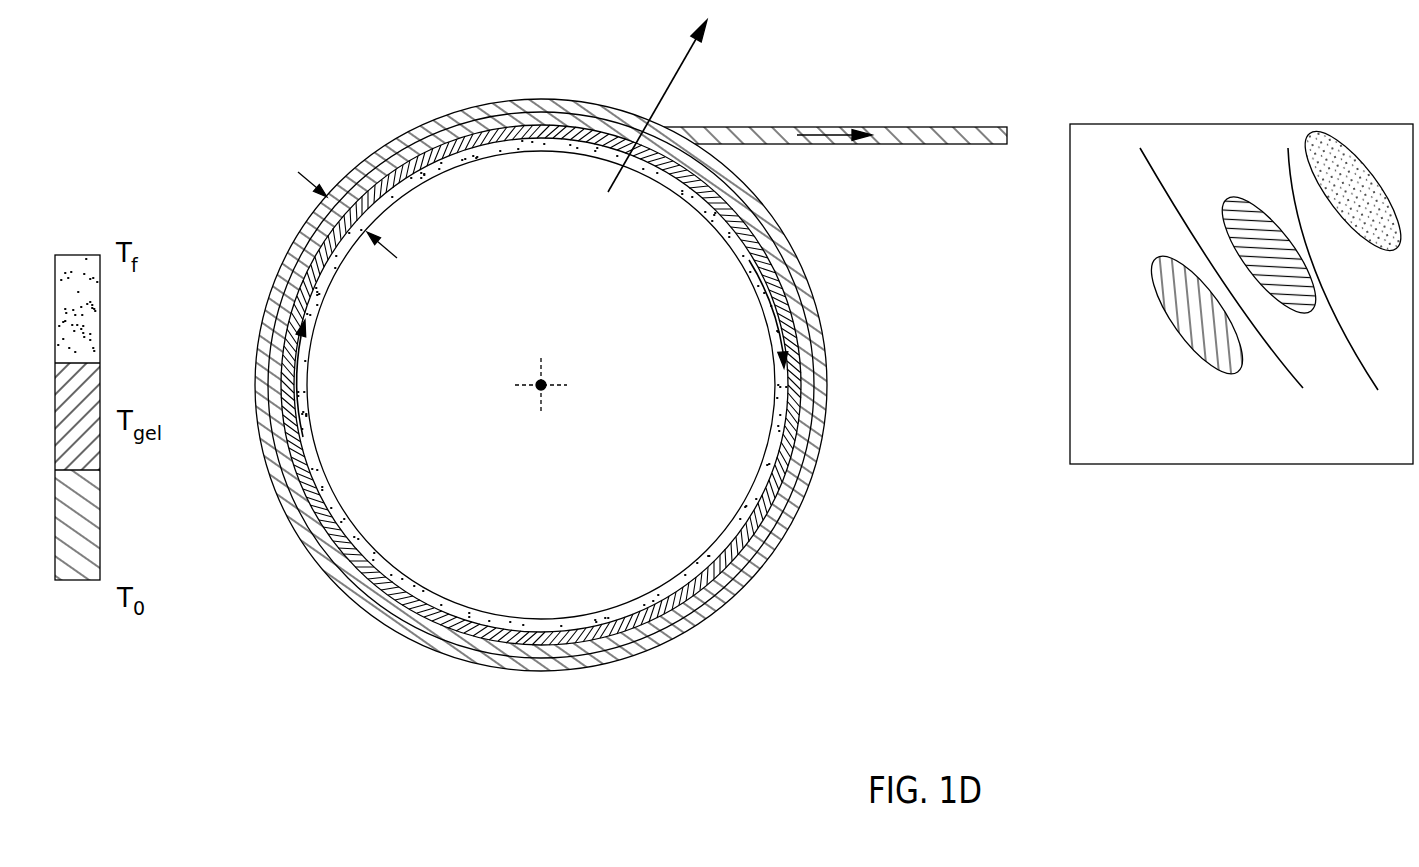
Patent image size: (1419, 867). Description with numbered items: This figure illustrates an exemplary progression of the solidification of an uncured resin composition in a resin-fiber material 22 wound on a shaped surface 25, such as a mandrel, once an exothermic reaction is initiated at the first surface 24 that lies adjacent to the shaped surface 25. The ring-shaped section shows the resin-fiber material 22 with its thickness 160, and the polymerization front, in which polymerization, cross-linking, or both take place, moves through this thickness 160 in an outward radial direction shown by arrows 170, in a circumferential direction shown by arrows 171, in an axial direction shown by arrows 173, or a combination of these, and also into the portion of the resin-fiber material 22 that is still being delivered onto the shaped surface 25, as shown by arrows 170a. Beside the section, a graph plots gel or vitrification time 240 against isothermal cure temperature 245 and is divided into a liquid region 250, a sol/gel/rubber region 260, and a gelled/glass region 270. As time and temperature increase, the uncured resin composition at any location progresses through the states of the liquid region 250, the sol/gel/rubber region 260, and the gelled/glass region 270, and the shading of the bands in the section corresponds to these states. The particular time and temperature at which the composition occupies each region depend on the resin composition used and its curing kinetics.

The resin-fiber material 22 is at (438, 118).
The first surface 24 is at (397, 190).
The shaped surface 25 is at (590, 495).
The thickness 160 is at (298, 172).
The arrows 170 is at (688, 52).
The arrows 170a is at (836, 132).
The arrows 171 is at (753, 287).
The arrows 173 is at (547, 391).
The gel or vitrification time 240 is at (1241, 313).
The isothermal cure temperature 245 is at (1197, 269).
The liquid region 250 is at (833, 325).
The sol/gel/rubber region 260 is at (799, 287).
The gelled/glass region 270 is at (755, 230).